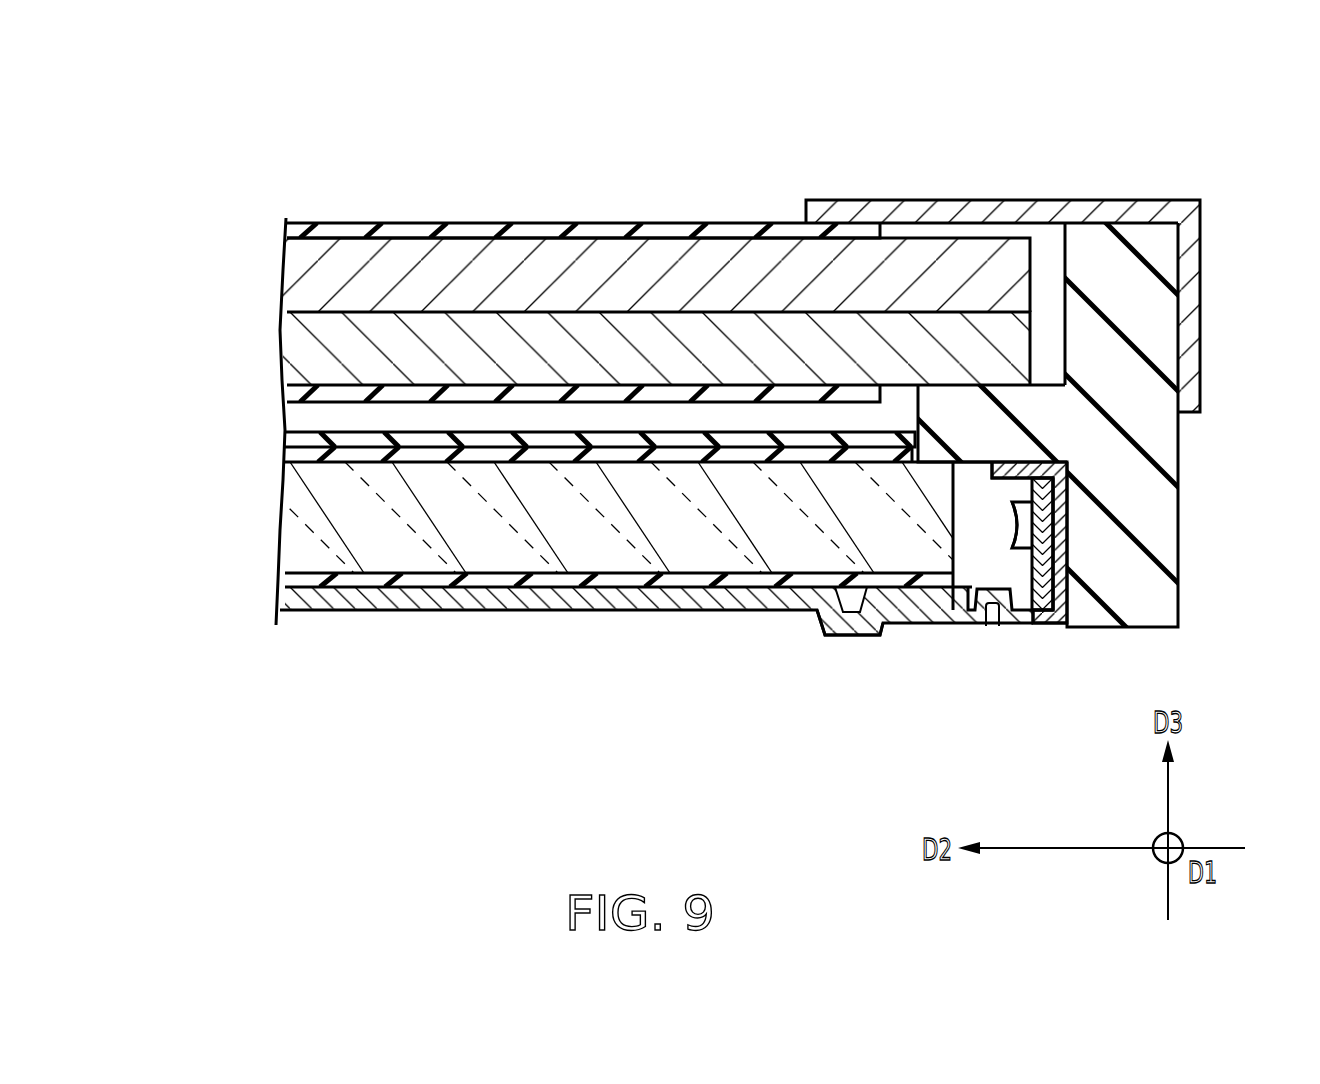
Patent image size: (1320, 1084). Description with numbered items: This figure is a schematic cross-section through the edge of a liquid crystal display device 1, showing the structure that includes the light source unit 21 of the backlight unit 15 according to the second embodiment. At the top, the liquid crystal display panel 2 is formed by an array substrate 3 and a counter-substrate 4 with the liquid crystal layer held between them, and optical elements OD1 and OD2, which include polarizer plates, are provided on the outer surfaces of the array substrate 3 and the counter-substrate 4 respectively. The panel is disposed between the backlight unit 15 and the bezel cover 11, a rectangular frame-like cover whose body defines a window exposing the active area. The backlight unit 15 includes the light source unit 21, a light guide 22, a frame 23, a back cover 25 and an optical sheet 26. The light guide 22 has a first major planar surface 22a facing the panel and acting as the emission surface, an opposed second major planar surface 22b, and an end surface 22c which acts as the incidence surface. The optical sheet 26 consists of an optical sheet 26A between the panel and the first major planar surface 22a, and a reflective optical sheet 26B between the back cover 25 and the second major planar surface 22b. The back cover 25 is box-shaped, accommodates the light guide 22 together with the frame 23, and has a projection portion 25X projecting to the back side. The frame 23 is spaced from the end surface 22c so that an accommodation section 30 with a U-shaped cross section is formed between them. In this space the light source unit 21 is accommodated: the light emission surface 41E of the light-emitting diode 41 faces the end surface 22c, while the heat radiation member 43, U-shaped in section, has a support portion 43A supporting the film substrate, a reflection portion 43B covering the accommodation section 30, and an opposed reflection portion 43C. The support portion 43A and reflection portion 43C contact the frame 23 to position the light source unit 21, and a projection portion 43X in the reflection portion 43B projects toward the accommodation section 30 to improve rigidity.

The liquid crystal display device 1 is at (819, 132).
The liquid crystal display panel 2 is at (192, 238).
The array substrate 3 is at (286, 337).
The counter-substrate 4 is at (286, 271).
The optical element OD1 is at (284, 393).
The optical element OD2 is at (286, 232).
The bezel cover 11 is at (1187, 208).
The backlight unit 15 is at (266, 440).
The light source unit 21 is at (1086, 458).
The light guide 22 is at (507, 548).
The first major planar surface 22a is at (636, 468).
The second major planar surface 22b is at (708, 582).
The end surface 22c is at (955, 603).
The frame 23 is at (1167, 252).
The back cover 25 is at (323, 598).
The projection portion 25X is at (853, 632).
The optical sheet 26 is at (192, 457).
The optical sheet 26A is at (288, 454).
The optical sheet 26B is at (285, 580).
The accommodation section 30 is at (975, 492).
The light-emitting diode 41 is at (1027, 522).
The light emission surface 41E is at (1010, 523).
The heat radiation member 43 is at (1056, 636).
The support portion 43A is at (1062, 572).
The reflection portion 43B is at (1034, 614).
The reflection portion 43C is at (1050, 456).
The projection portion 43X is at (991, 628).